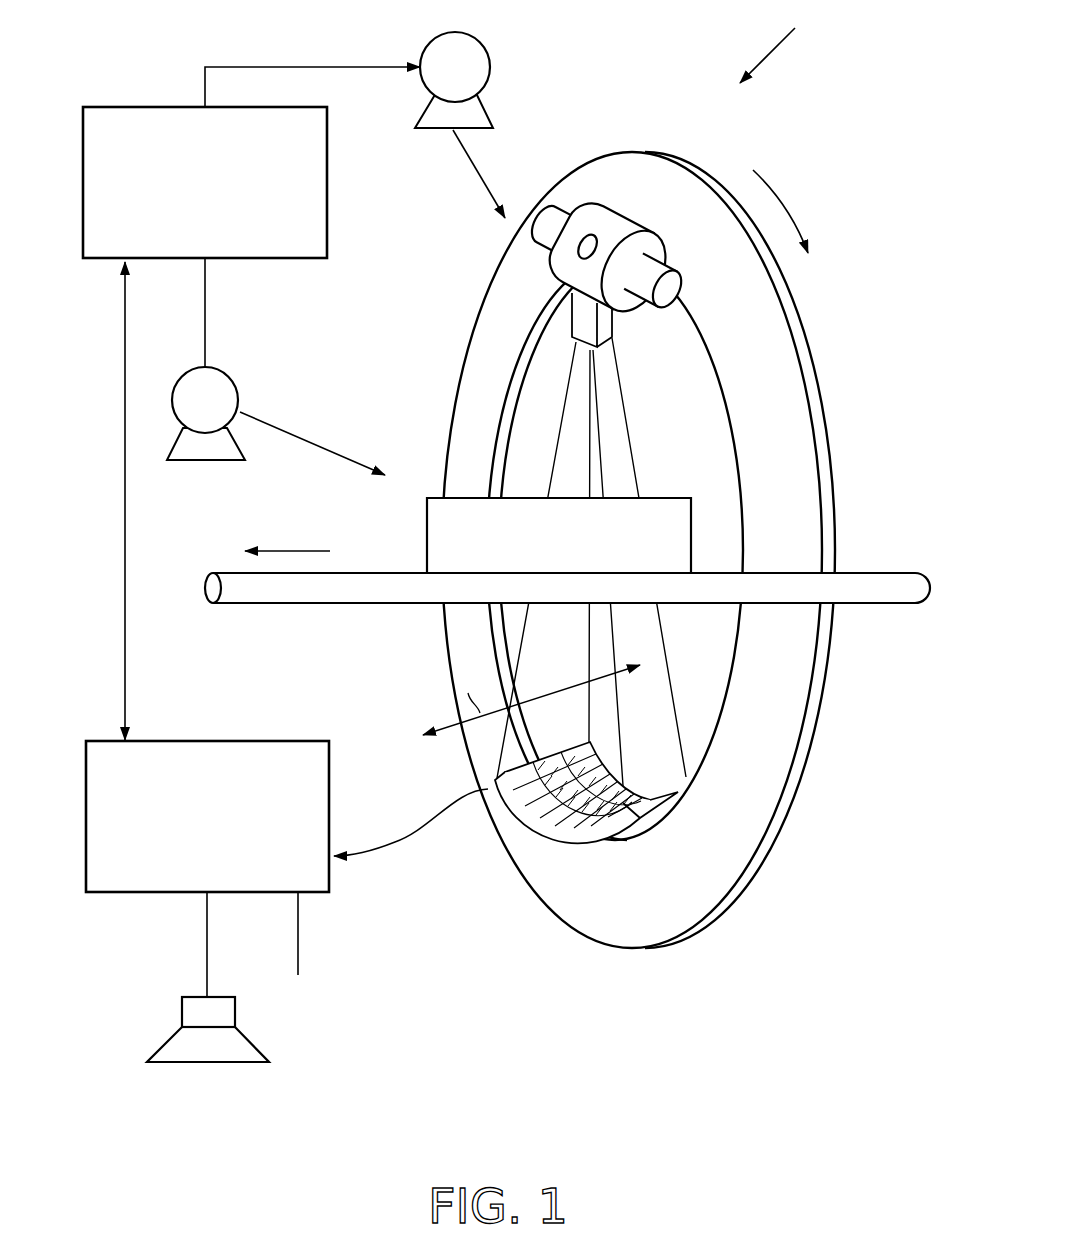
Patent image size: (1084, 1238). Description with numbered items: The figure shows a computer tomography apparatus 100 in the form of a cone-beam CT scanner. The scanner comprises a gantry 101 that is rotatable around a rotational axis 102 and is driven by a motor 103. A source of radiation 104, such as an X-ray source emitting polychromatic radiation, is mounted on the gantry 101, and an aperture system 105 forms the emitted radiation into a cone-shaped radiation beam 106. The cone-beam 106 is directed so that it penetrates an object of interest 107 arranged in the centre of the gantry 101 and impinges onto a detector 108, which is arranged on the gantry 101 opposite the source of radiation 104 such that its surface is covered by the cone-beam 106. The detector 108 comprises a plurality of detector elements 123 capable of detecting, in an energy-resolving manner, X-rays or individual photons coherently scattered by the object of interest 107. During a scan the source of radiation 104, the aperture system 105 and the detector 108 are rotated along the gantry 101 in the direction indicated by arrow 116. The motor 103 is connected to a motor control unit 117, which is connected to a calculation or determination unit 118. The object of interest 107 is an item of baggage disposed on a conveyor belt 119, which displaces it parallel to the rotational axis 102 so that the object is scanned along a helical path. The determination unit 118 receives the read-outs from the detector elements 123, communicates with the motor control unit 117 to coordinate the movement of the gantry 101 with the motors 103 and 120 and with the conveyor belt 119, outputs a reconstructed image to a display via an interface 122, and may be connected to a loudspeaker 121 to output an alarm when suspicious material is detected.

The computer tomography apparatus 100 is at (778, 41).
The gantry 101 is at (793, 720).
The rotational axis 102 is at (297, 551).
The motor 103 is at (492, 57).
The source of radiation 104 is at (626, 221).
The aperture system 105 is at (583, 318).
The cone-shaped radiation beam 106 is at (634, 448).
The object of interest 107 is at (427, 532).
The detector 108 is at (548, 846).
The arrow 116 is at (783, 198).
The motor control unit 117 is at (135, 105).
The calculation or determination unit 118 is at (236, 741).
The conveyor belt 119 is at (893, 577).
The motor 120 is at (240, 393).
The loudspeaker 121 is at (207, 1065).
The interface 122 is at (300, 935).
The detector elements 123 is at (548, 758).